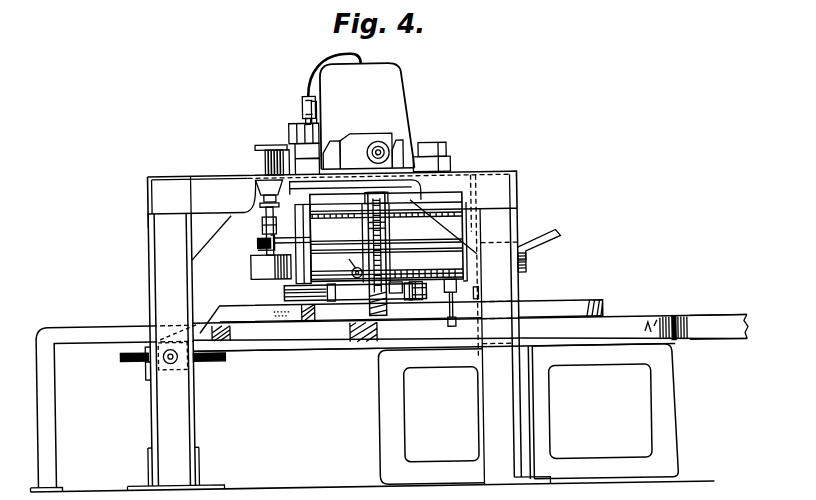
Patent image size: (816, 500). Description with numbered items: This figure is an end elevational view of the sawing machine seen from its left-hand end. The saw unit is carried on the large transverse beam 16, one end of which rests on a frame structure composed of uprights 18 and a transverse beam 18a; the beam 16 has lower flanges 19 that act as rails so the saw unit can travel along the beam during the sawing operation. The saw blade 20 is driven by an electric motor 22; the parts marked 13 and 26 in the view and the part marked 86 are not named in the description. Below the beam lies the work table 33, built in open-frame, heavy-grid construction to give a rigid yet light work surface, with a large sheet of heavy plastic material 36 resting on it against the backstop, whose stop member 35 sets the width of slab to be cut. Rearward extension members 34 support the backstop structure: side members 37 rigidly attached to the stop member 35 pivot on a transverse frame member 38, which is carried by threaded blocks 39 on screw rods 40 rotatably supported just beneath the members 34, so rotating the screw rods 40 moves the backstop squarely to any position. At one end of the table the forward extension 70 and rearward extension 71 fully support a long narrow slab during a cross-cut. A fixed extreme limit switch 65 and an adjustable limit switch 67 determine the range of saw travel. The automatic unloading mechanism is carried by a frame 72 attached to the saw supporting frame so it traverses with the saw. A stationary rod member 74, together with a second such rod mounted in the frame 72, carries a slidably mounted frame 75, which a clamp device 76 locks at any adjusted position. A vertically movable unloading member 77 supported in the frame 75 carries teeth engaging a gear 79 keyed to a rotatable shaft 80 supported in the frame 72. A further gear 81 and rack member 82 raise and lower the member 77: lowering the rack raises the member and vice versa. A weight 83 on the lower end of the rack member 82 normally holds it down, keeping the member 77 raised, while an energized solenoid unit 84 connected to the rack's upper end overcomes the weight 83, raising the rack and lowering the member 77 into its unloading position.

The gear housing upper section 13 is at (393, 228).
The transverse beam 16 is at (398, 70).
The uprights 18 is at (150, 240).
The transverse beam 18a is at (210, 186).
The lower flanges 19 is at (450, 162).
The saw blade 20 is at (450, 312).
The electric motor 22 is at (286, 293).
The motor mounting bracket 26 is at (442, 147).
The work table 33 is at (632, 322).
The members 34 is at (340, 333).
The stop member 35 is at (295, 313).
The plastic material 36 is at (577, 303).
The side members 37 is at (238, 312).
The transverse frame member 38 is at (150, 370).
The threaded blocks 39 is at (150, 344).
The screw rods 40 is at (128, 358).
The extreme limit switch 65 is at (291, 131).
The adjustable limit switch 67 is at (305, 102).
The forward extension 70 is at (716, 323).
The rearward extension 71 is at (323, 349).
The frame 72 is at (312, 206).
The stationary rod member 74 is at (422, 277).
The slidably mounted frame 75 is at (394, 252).
The clamp device 76 is at (356, 266).
The vertically movable member 77 is at (389, 196).
The gear 79 is at (387, 224).
The rotatable shaft 80 is at (353, 237).
The gear 81 is at (264, 234).
The rack member 82 is at (264, 222).
The weight 83 is at (252, 270).
The solenoid unit 84 is at (258, 157).
The rack bar 86 is at (381, 313).